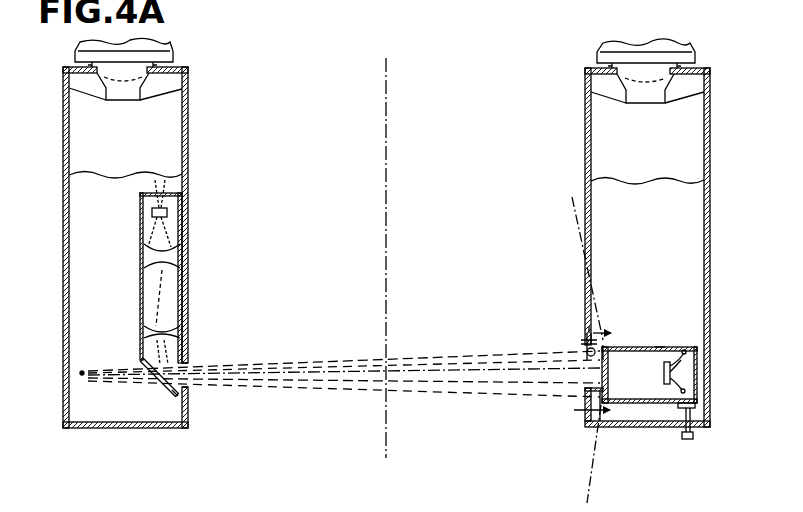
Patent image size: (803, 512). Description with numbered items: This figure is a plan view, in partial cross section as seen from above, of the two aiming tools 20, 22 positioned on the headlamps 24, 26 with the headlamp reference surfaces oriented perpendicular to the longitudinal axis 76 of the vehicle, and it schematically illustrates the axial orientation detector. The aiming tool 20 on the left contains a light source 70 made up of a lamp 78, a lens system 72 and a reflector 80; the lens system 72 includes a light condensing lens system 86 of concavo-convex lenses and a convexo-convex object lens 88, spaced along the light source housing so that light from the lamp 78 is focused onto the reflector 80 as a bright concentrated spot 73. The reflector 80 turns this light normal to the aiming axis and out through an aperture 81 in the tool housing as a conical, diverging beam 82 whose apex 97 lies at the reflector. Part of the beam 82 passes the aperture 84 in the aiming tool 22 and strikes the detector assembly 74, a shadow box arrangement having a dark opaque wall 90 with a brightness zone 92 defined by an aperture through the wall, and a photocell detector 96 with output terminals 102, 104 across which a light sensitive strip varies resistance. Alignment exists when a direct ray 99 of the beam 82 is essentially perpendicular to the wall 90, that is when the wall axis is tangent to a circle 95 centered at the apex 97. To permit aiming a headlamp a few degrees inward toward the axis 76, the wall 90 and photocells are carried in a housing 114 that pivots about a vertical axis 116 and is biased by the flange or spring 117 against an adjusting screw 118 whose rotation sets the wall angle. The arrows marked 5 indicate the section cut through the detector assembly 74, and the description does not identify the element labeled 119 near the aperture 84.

The aiming tool 20 is at (210, 211).
The aiming tool 22 is at (565, 189).
The headlamp 24 is at (172, 46).
The headlamp 26 is at (598, 50).
The light source 70 is at (136, 240).
The lens system 72 is at (157, 296).
The spot 73 is at (168, 392).
The detector assembly 74 is at (645, 340).
The longitudinal axis 76 is at (386, 158).
The lamp 78 is at (151, 211).
The reflector 80 is at (146, 372).
The aperture 81 is at (196, 361).
The beam 82 is at (470, 353).
The aperture 84 is at (586, 352).
The light condensing lens system 86 is at (183, 258).
The object lens 88 is at (151, 333).
The opaque wall 90 is at (612, 390).
The brightness zone 92 is at (663, 374).
The circle 95 is at (580, 221).
The detector 96 is at (672, 368).
The apex 97 is at (82, 375).
The direct ray 99 is at (520, 380).
The output terminal 102 is at (676, 350).
The output terminal 104 is at (698, 386).
The housing 114 is at (657, 346).
The vertical axis 116 is at (604, 343).
The flange 117 is at (700, 411).
The adjusting screw 118 is at (684, 437).
The tube 119 is at (590, 325).
The section line 5- 5 is at (597, 372).